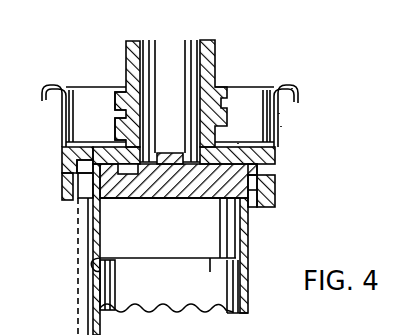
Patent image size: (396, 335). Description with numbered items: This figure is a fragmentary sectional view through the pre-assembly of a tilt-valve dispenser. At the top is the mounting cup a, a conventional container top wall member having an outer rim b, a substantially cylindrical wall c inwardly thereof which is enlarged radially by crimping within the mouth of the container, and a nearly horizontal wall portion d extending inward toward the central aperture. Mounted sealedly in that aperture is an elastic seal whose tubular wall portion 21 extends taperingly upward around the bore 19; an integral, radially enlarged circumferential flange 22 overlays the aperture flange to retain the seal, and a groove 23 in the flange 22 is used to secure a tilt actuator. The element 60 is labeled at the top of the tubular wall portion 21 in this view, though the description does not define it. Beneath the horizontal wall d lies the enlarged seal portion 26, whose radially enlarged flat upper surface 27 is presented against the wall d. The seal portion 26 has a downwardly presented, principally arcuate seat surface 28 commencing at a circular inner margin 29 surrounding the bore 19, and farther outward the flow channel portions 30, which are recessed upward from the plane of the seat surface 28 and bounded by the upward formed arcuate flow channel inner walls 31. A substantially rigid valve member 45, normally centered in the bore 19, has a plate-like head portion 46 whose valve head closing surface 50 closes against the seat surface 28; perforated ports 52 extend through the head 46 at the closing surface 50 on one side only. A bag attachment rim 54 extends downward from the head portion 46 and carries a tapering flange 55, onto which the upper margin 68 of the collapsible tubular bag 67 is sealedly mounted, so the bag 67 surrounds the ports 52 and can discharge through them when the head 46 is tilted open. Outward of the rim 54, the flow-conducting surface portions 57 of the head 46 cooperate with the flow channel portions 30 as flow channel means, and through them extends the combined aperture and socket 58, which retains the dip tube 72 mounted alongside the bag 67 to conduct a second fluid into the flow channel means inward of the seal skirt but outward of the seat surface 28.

The bore 19 is at (208, 61).
The tubular wall portion 21 is at (126, 50).
The circumferential flange 22 is at (126, 92).
The groove 23 is at (115, 107).
The seal portion 26 is at (62, 152).
The flat upper surface 27 is at (272, 144).
The seat surface 28 is at (193, 200).
The circular inner margin 29 is at (170, 235).
The flow channel portions 30 is at (88, 147).
The flow channel inner walls 31 is at (275, 164).
The valve member 45 is at (164, 147).
The head portion 46 is at (178, 199).
The valve head closing surface 50 is at (127, 198).
The perforated ports 52 is at (105, 202).
The bag attachment rim 54 is at (100, 259).
The tapering flange 55 is at (106, 267).
The flow-conducting surface portions 57 is at (67, 171).
The aperture and socket 58 is at (72, 193).
The bore 60 is at (172, 47).
The bag 67 is at (223, 299).
The upper margin 68 is at (243, 249).
The dip tube 72 is at (78, 279).
The mounting cup a is at (281, 125).
The outer rim b is at (292, 89).
The cylindrical wall c is at (279, 114).
The horizontal wall portion d is at (238, 143).